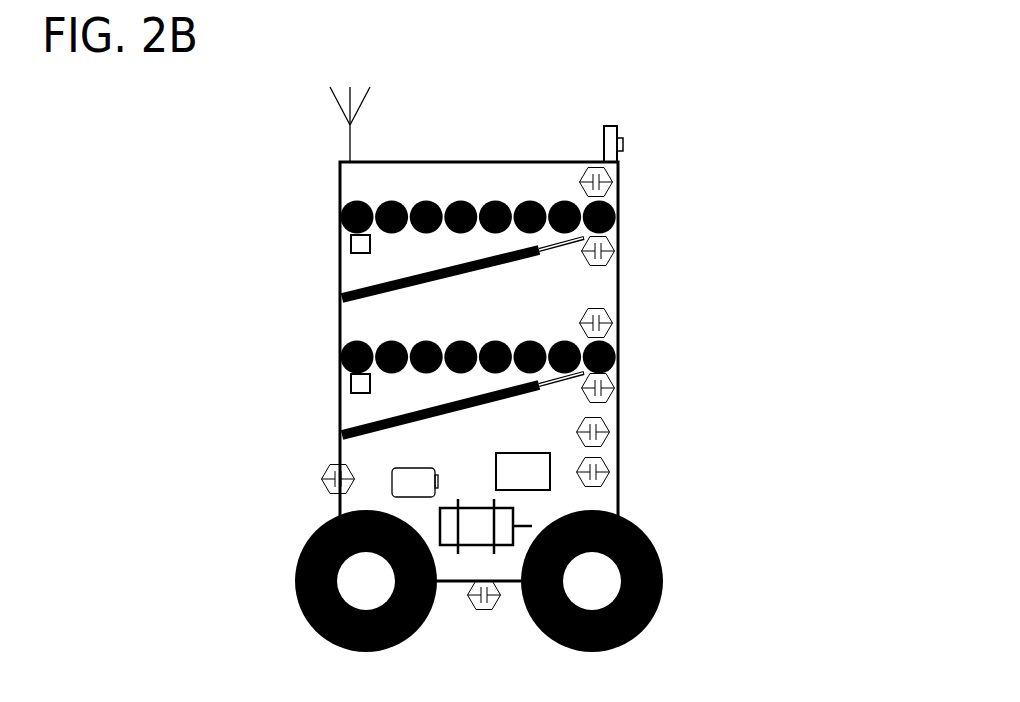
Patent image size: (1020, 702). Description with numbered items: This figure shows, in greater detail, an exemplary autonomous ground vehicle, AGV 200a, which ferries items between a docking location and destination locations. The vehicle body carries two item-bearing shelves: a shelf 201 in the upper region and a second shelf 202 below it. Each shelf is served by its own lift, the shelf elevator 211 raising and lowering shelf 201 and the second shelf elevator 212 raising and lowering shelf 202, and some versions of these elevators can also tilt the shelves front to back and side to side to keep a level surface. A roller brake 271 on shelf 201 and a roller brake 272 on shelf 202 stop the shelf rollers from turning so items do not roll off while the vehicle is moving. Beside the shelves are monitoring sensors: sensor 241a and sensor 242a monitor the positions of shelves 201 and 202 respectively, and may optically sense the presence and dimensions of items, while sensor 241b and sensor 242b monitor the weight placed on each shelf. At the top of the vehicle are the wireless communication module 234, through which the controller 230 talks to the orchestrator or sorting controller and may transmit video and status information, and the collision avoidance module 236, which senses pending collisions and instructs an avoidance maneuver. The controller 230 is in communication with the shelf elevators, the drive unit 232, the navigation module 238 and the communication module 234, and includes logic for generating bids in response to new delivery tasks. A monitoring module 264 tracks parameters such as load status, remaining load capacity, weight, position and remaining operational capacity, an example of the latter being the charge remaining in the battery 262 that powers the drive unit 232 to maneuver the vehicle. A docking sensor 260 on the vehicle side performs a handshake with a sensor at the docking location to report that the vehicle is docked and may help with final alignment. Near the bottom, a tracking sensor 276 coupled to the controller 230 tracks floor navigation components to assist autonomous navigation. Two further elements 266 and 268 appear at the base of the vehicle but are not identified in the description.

The autonomous ground vehicle (AGV) 200a is at (503, 50).
The wireless communication module 234 is at (353, 141).
The collision avoidance module 236 is at (603, 143).
The sensor 241a is at (613, 173).
The shelf 201 is at (617, 212).
The sensor 241b is at (614, 240).
The roller brake 271 is at (351, 243).
The shelf elevator 211 is at (490, 258).
The sensor 242a is at (613, 315).
The second shelf 202 is at (617, 353).
The sensor 242b is at (614, 380).
The roller brake 272 is at (351, 383).
The second shelf elevator 212 is at (490, 392).
The navigation module 238 is at (610, 424).
The monitoring module 264 is at (610, 465).
The docking sensor 260 is at (323, 476).
The battery 262 is at (428, 494).
The controller 230 is at (538, 481).
The drive unit 232 is at (478, 505).
The left wheel 266 is at (300, 557).
The right wheel 268 is at (652, 540).
The tracking sensor 276 is at (493, 610).